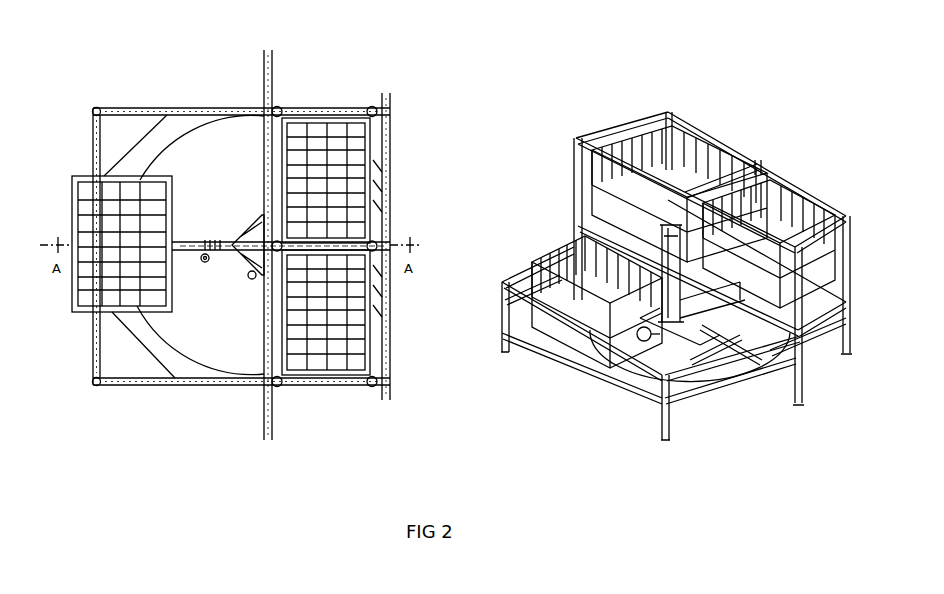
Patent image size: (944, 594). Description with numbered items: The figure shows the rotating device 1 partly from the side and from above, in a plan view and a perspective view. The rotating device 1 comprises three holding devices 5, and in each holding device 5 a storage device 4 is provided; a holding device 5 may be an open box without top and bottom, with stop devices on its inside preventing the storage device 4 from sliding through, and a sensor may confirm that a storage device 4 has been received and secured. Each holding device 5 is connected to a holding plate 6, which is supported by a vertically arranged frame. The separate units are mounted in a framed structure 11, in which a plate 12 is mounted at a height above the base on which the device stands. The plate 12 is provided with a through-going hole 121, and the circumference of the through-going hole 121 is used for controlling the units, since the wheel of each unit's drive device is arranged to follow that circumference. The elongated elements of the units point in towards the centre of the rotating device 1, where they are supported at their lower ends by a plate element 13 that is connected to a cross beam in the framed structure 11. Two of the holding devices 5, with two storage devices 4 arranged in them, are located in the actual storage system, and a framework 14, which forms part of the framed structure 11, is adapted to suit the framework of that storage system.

The rotating device 1 is at (550, 106).
The storage device 4 is at (95, 222).
The holding device 5 is at (82, 172).
The holding plate 6 is at (595, 423).
The framed structure 11 is at (133, 83).
The plate 12 is at (185, 122).
The through-going hole 121 is at (712, 398).
The plate element 13 is at (262, 218).
The framework 14 is at (358, 108).